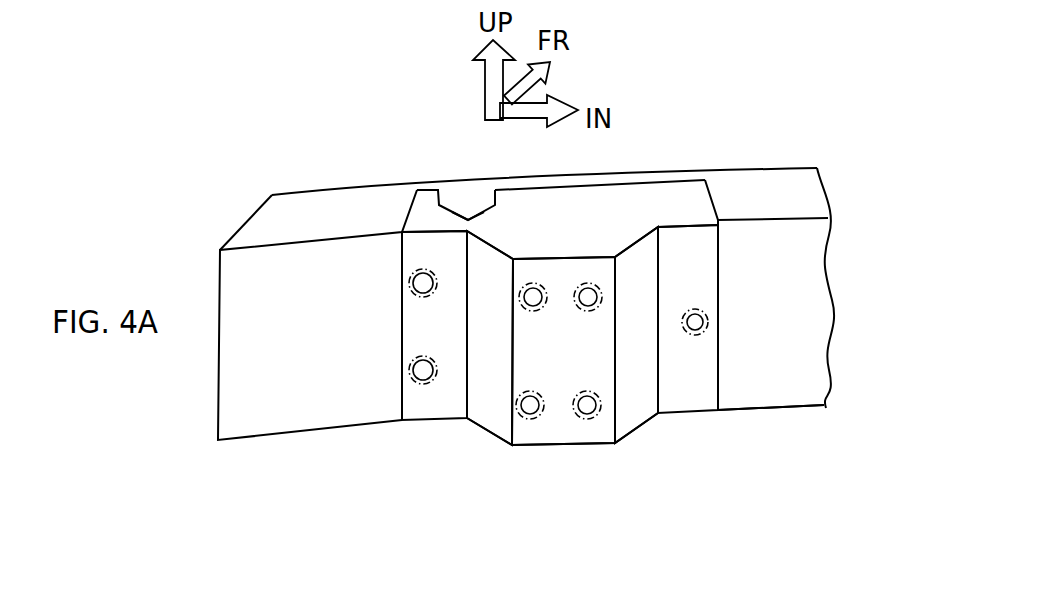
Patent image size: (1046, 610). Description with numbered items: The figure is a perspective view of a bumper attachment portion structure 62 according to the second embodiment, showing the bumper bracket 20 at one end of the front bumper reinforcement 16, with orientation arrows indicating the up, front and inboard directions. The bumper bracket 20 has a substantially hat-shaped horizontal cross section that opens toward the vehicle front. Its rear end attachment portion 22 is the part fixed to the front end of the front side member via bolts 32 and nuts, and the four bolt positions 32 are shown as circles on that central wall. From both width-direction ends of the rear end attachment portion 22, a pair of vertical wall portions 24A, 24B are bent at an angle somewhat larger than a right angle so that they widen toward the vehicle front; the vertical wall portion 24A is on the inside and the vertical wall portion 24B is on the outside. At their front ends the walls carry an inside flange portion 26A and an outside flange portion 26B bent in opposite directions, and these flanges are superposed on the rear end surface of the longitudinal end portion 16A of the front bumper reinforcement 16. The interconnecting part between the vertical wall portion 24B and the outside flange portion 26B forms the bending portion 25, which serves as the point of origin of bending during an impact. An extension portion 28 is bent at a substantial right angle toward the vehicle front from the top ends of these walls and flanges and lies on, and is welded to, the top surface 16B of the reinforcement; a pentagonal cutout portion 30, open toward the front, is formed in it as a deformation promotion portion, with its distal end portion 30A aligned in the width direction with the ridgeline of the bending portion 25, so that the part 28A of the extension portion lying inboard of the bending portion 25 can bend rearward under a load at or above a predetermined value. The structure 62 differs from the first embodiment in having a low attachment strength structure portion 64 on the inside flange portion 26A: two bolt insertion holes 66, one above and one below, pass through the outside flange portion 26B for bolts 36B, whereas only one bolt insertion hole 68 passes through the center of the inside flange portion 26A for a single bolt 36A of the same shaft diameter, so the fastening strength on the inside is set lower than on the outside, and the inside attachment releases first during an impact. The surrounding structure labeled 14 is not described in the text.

The vehicle body panel 14 is at (787, 137).
The front bumper reinforcement 16 is at (737, 157).
The longitudinal direction end portion 16A is at (375, 183).
The top surface 16B is at (788, 175).
The bumper bracket 20 is at (592, 460).
The rear end attachment portion 22 is at (552, 433).
The vertical wall portion 24A is at (632, 415).
The vertical wall portion 24B is at (498, 425).
The bending portion 25 is at (467, 340).
The inside flange portion 26A is at (693, 403).
The outside flange portion 26B is at (433, 405).
The extension portion 28 is at (621, 198).
The part of the extension portion 28A is at (592, 203).
The cutout portion 30 is at (440, 202).
The distal end portion 30A is at (468, 218).
The bolts 32 is at (584, 283).
The bolt 36A is at (708, 320).
The bolts 36B is at (409, 278).
The bumper attachment portion structure 62 is at (757, 422).
The low attachment strength structure portion 64 is at (735, 333).
The bolt insertion holes 66 is at (427, 293).
The bolt insertion hole 68 is at (690, 335).